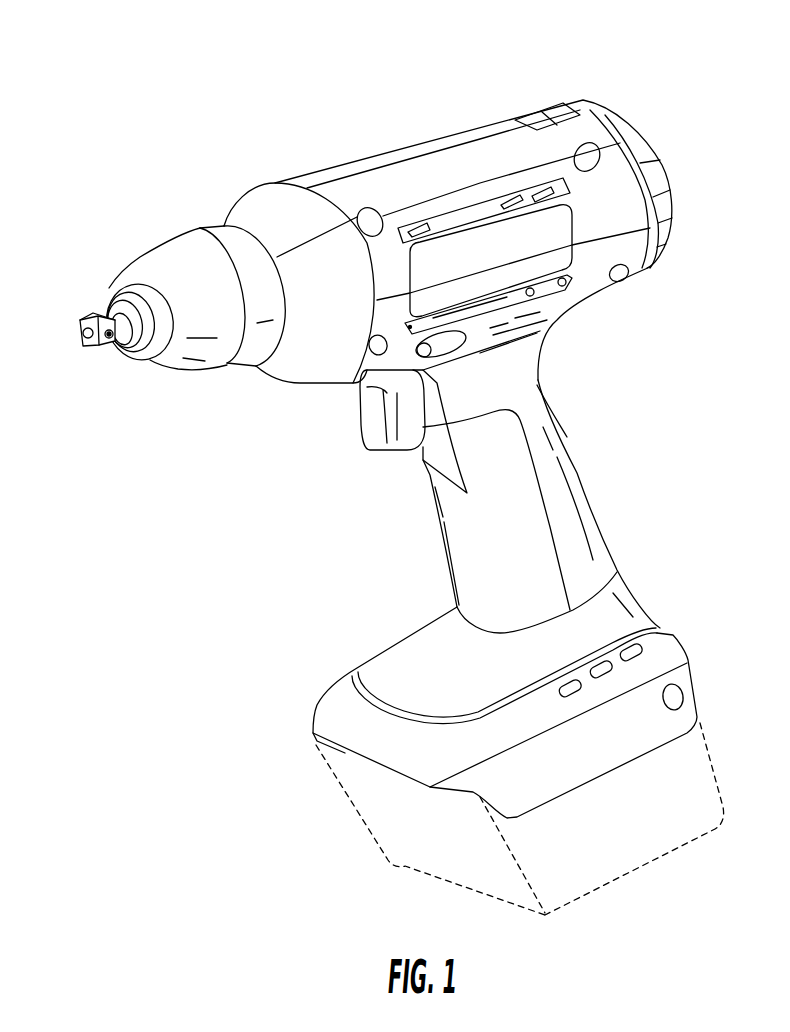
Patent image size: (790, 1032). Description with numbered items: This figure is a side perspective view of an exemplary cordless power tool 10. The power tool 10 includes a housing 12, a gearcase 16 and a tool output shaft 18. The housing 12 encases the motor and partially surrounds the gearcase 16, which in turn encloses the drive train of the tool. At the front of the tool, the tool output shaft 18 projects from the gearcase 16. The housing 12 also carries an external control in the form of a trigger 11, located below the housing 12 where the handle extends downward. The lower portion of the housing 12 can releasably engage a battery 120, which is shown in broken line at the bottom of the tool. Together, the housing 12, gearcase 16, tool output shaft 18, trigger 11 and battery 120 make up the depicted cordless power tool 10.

The power tool 10 is at (397, 108).
The trigger 11 is at (380, 405).
The housing 12 is at (463, 170).
The gearcase 16 is at (188, 268).
The tool output shaft 18 is at (80, 337).
The battery 120 is at (388, 801).